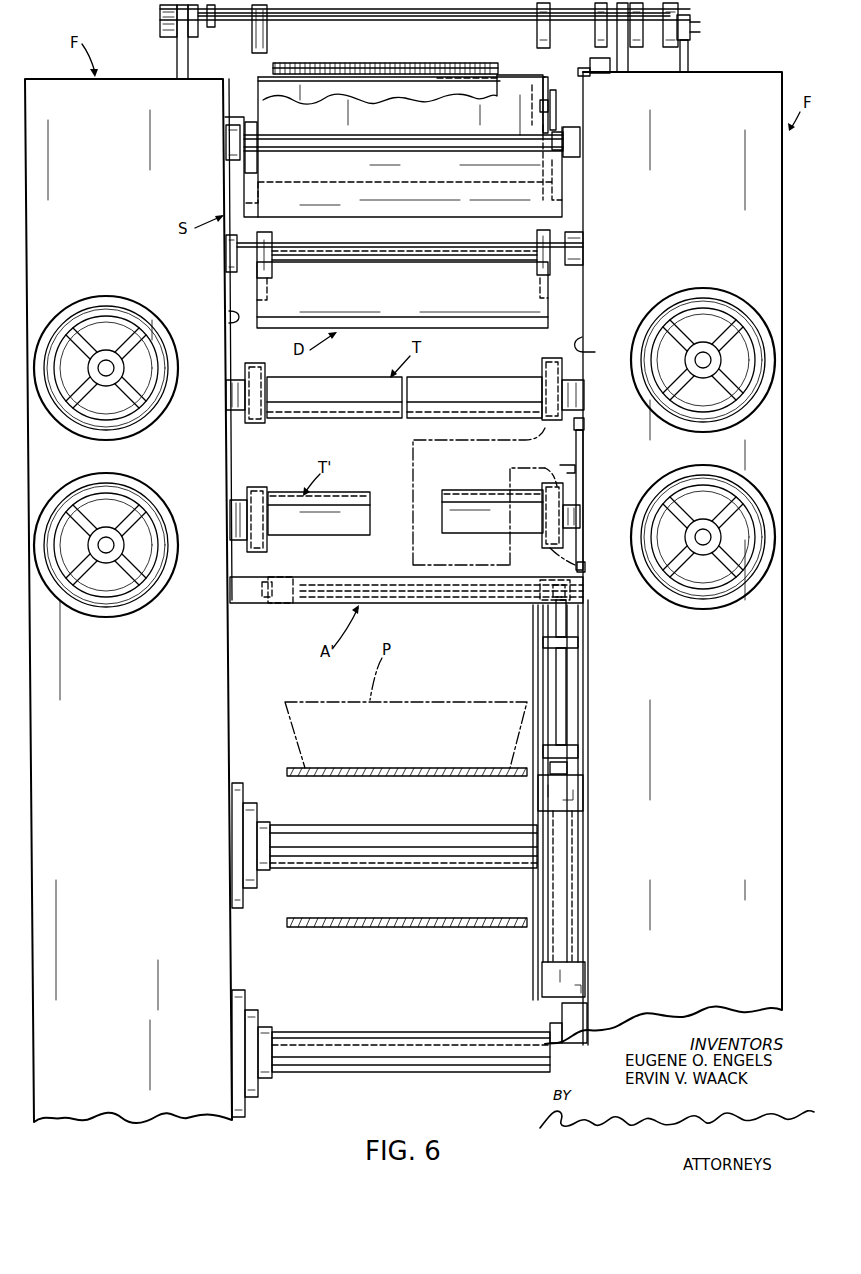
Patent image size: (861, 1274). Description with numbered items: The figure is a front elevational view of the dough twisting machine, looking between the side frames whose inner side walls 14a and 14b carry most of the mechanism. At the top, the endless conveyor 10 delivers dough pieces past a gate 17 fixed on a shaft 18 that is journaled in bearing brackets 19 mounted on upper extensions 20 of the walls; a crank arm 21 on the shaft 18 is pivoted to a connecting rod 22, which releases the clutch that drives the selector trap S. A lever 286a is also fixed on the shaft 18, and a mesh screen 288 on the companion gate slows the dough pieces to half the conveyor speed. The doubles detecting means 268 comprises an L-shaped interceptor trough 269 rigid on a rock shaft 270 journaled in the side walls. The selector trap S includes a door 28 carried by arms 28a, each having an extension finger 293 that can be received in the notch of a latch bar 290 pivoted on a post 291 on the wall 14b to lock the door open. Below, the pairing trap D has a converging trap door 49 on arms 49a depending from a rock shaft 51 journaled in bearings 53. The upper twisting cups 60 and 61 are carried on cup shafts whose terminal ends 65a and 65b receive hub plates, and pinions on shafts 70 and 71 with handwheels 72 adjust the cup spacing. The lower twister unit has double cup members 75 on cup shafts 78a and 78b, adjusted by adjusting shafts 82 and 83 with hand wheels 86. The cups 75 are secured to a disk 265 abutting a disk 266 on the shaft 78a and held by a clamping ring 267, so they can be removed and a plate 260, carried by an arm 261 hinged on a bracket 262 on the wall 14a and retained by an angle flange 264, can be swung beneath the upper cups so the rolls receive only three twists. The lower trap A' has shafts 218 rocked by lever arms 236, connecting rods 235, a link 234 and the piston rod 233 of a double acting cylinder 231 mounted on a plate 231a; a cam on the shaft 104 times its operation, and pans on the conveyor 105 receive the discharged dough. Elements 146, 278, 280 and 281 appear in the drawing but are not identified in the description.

The endless conveyor 10 is at (418, 65).
The inner side wall 14a is at (600, 558).
The inner side wall 14b is at (229, 318).
The gate 17 is at (313, 47).
The shaft 18 is at (480, 15).
The bearing brackets 19 is at (188, 55).
The upper extensions 20 is at (716, 69).
The crank arm 21 is at (685, 16).
The connecting rod 22 is at (688, 55).
The door 28 is at (465, 204).
The arms 28a is at (258, 158).
The trap door 49 is at (428, 298).
The arms 49a is at (272, 292).
The rock shaft 51 is at (410, 230).
The bearings 53 is at (249, 264).
The twisting cup 60 is at (459, 383).
The twisting cup 61 is at (350, 377).
The terminal end of cup shaft 65a is at (576, 383).
The terminal end of cup shaft 65b is at (232, 420).
The shaft 70 is at (702, 351).
The shaft 71 is at (106, 360).
The handwheels 72 is at (172, 392).
The double cup member 75 is at (523, 524).
The cup shaft 78a is at (572, 503).
The cup shaft 78b is at (241, 503).
The adjusting shaft 82 is at (702, 530).
The adjusting shaft 83 is at (106, 537).
The hand wheels 86 is at (142, 608).
The shaft 104 is at (418, 837).
The conveyor 105 is at (353, 773).
The shaft 146 is at (414, 1045).
The shaft 218 is at (432, 603).
The double acting cylinder 231 is at (579, 926).
The plate 231a is at (533, 647).
The piston rod 233 is at (567, 770).
The link 234 is at (557, 726).
The connecting rods 235 is at (547, 702).
The lever arms 236 is at (563, 637).
The plate 260 is at (413, 468).
The arm 261 is at (584, 446).
The bracket 262 is at (583, 430).
The angle flange 264 is at (582, 470).
The disk 265 is at (582, 570).
The disk 266 is at (551, 478).
The clamping ring 267 is at (262, 364).
The doubles detecting means 268 is at (348, 95).
The interceptor trough 269 is at (545, 83).
The rock shaft 270 is at (465, 135).
The bearings 278 is at (598, 34).
The block 280 is at (603, 77).
The box 281 is at (588, 76).
The lever 286a is at (210, 26).
The mesh screen 288 is at (314, 62).
The latch bar 290 is at (558, 93).
The post 291 is at (573, 98).
The extension finger 293 is at (545, 108).